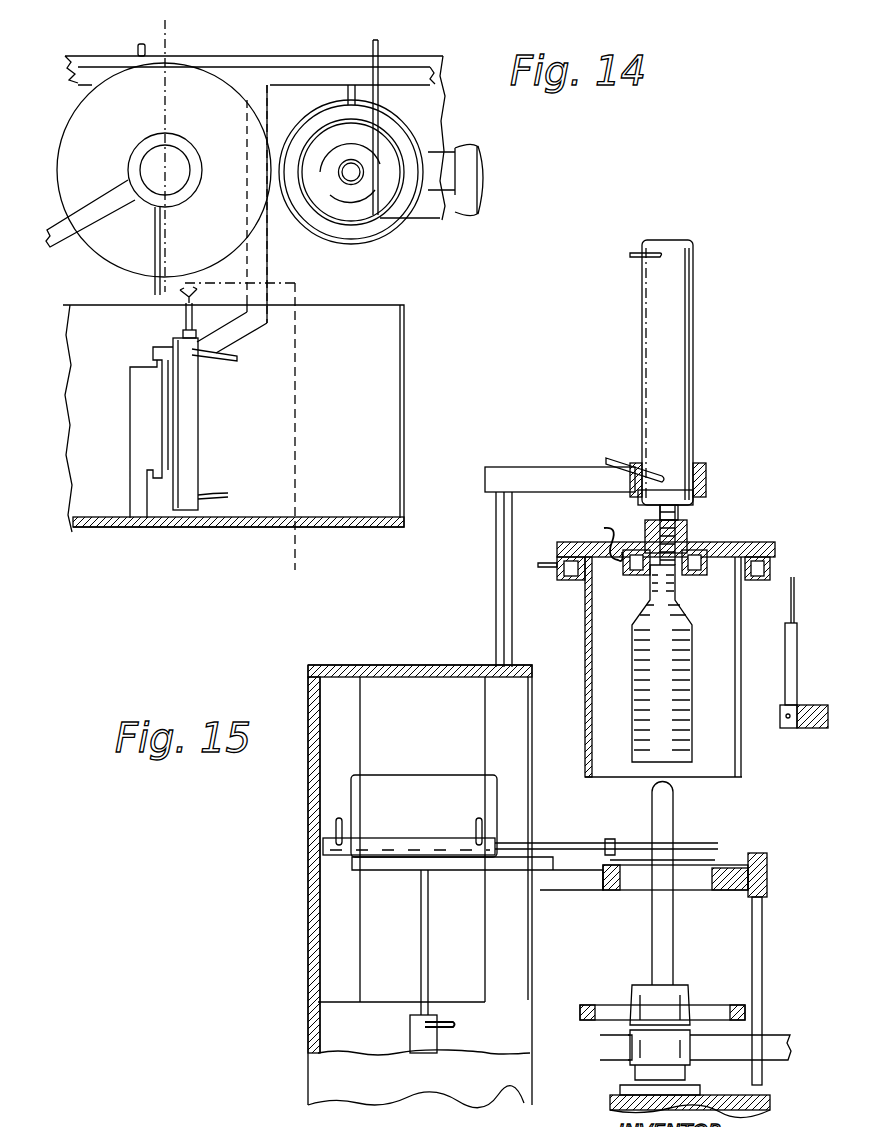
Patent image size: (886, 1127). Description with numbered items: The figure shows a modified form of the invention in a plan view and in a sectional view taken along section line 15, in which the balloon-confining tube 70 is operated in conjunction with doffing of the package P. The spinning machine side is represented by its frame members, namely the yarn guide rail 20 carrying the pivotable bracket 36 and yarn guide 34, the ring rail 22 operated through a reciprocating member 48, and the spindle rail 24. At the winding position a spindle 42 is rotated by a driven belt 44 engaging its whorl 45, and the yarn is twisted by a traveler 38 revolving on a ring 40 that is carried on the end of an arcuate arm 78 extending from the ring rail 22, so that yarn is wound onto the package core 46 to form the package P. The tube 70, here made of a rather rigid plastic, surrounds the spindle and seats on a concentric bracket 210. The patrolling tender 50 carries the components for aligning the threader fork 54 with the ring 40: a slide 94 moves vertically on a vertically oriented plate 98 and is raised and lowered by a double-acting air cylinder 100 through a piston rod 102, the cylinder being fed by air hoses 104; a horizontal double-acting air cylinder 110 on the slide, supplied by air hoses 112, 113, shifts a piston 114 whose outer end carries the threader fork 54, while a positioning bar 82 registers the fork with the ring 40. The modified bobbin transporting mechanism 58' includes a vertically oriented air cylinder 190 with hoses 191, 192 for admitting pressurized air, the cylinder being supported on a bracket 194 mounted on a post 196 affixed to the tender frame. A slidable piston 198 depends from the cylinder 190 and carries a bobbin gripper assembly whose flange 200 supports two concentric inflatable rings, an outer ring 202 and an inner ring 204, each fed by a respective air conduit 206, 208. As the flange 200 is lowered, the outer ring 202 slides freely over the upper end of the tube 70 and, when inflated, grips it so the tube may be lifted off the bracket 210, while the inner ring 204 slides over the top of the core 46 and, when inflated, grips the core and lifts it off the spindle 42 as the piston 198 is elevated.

In FIG. 14, the section line 15— 15 is at (142, 30).
In FIG. 15, the yarn guide rail 20 is at (812, 728).
In FIG. 14, the ring rail 22 is at (254, 66).
In FIG. 15, the ring rail 22 is at (764, 853).
In FIG. 14, the spindle rail 24 is at (430, 218).
In FIG. 15, the spindle rail 24 is at (612, 1100).
In FIG. 15, the yarn guide 34 is at (796, 584).
In FIG. 15, the pivotable bracket 36 is at (798, 638).
In FIG. 14, the traveler 38 is at (336, 190).
In FIG. 14, the ring 40 is at (349, 222).
In FIG. 15, the ring 40 is at (720, 858).
In FIG. 14, the spindle 42 is at (360, 166).
In FIG. 15, the spindle 42 is at (673, 796).
In FIG. 14, the driven belt 44 is at (400, 30).
In FIG. 15, the driven belt 44 is at (776, 1040).
In FIG. 15, the whorl 45 is at (642, 1045).
In FIG. 15, the package core 46 is at (672, 554).
In FIG. 15, the reciprocating member 48 is at (762, 916).
In FIG. 14, the tender 50 is at (150, 527).
In FIG. 15, the tender 50 is at (312, 878).
In FIG. 14, the threader fork 54 is at (184, 318).
In FIG. 15, the threader fork 54 is at (710, 848).
In FIG. 14, the modified bobbin transporting mechanism 58' is at (142, 170).
In FIG. 15, the modified bobbin transporting mechanism 58' is at (771, 500).
In FIG. 14, the tube 70 is at (375, 250).
In FIG. 15, the tube 70 is at (585, 630).
In FIG. 14, the arcuate arm 78 is at (268, 268).
In FIG. 15, the arcuate arm 78 is at (588, 884).
In FIG. 14, the positioning bar 82 is at (248, 331).
In FIG. 15, the positioning bar 82 is at (522, 868).
In FIG. 14, the slide 94 is at (152, 350).
In FIG. 15, the slide 94 is at (364, 785).
In FIG. 14, the vertically oriented plate 98 is at (138, 440).
In FIG. 15, the vertically oriented plate 98 is at (437, 735).
In FIG. 15, the double-acting air cylinder 100 is at (410, 1033).
In FIG. 15, the piston rod 102 is at (420, 940).
In FIG. 15, the air hoses 104 is at (450, 1020).
In FIG. 14, the double-acting air cylinder 110 is at (198, 470).
In FIG. 15, the double-acting air cylinder 110 is at (408, 840).
In FIG. 14, the air hose 112 is at (228, 494).
In FIG. 15, the air hose 112 is at (334, 830).
In FIG. 14, the air hose 113 is at (232, 362).
In FIG. 15, the air hose 113 is at (474, 818).
In FIG. 15, the piston 114 is at (556, 838).
In FIG. 14, the vertically oriented air cylinder 190 is at (157, 160).
In FIG. 15, the vertically oriented air cylinder 190 is at (646, 318).
In FIG. 15, the hose 191 is at (630, 254).
In FIG. 15, the hose 192 is at (612, 460).
In FIG. 14, the bracket 194 is at (60, 220).
In FIG. 15, the bracket 194 is at (537, 480).
In FIG. 15, the post 196 is at (496, 588).
In FIG. 15, the piston 198 is at (658, 514).
In FIG. 14, the flange 200 is at (90, 94).
In FIG. 15, the flange 200 is at (560, 538).
In FIG. 15, the outer inflatable ring 202 is at (578, 582).
In FIG. 15, the inner inflatable ring 204 is at (632, 580).
In FIG. 15, the air conduit 206 is at (530, 568).
In FIG. 15, the air conduit 208 is at (602, 528).
In FIG. 15, the concentric bracket 210 is at (724, 1004).
In FIG. 14, the package P is at (358, 190).
In FIG. 15, the package P is at (695, 628).